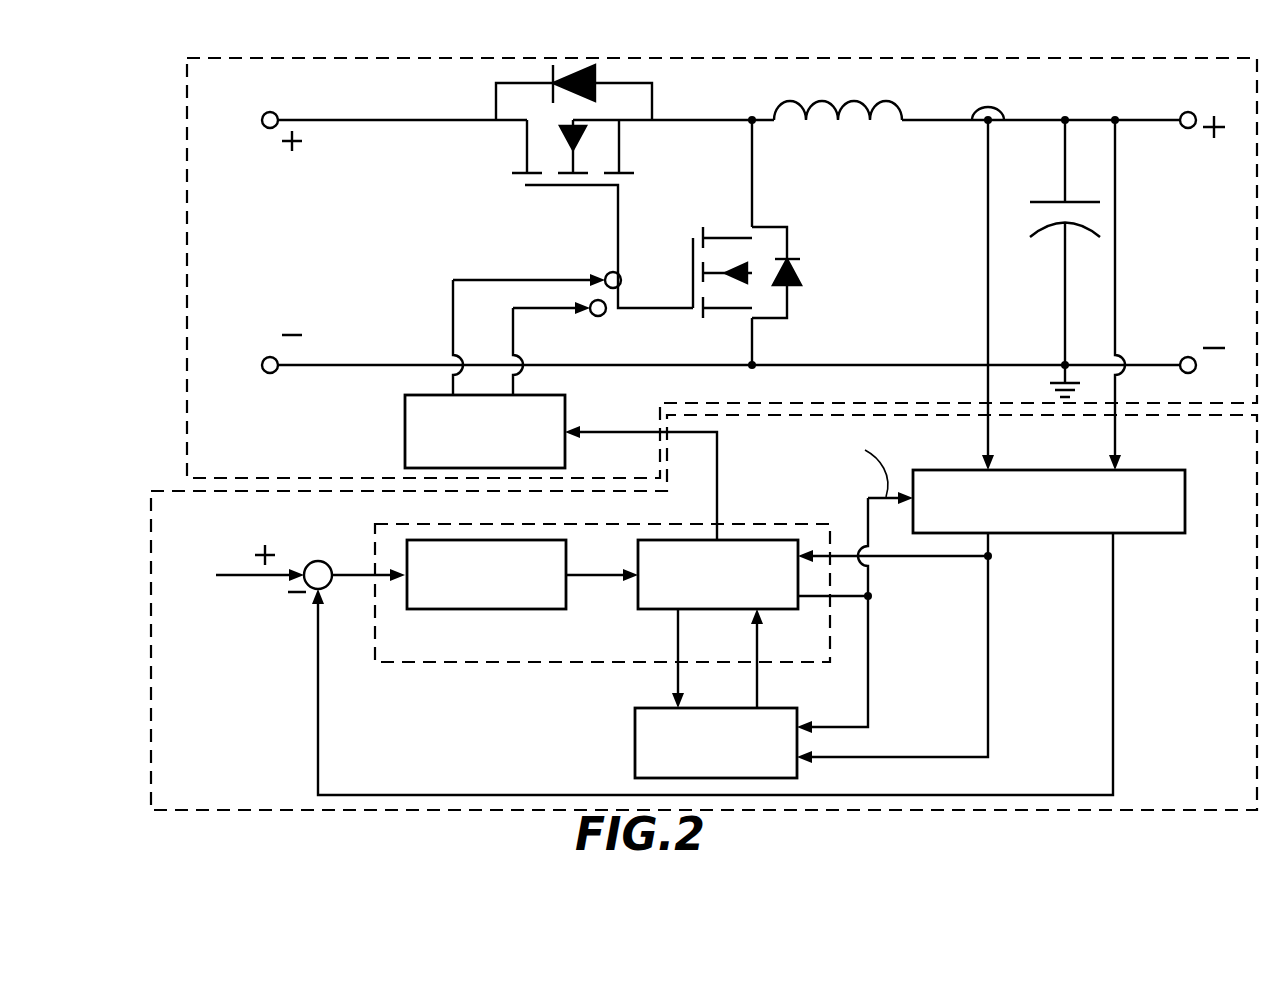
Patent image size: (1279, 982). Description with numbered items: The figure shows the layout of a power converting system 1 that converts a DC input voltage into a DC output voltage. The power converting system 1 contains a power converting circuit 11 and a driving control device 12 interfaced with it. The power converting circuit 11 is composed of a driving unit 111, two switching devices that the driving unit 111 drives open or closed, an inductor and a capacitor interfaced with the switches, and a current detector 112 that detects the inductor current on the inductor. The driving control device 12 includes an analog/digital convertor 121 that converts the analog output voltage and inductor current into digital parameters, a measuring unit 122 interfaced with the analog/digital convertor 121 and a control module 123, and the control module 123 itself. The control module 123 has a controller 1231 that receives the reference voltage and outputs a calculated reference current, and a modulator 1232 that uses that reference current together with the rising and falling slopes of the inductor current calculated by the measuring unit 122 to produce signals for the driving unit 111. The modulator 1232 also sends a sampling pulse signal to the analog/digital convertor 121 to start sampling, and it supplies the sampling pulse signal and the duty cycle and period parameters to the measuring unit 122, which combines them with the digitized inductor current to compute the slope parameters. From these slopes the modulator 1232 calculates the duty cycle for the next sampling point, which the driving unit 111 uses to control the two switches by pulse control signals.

The power converting system 1 is at (125, 95).
The power converting circuit 11 is at (187, 286).
The driving control device 12 is at (150, 508).
The driving unit 111 is at (553, 393).
The current detector 112 is at (990, 108).
The analog/digital convertor 121 is at (1177, 470).
The measuring unit 122 is at (635, 745).
The control module 123 is at (374, 527).
The controller 1231 is at (570, 581).
The modulator 1232 is at (738, 540).